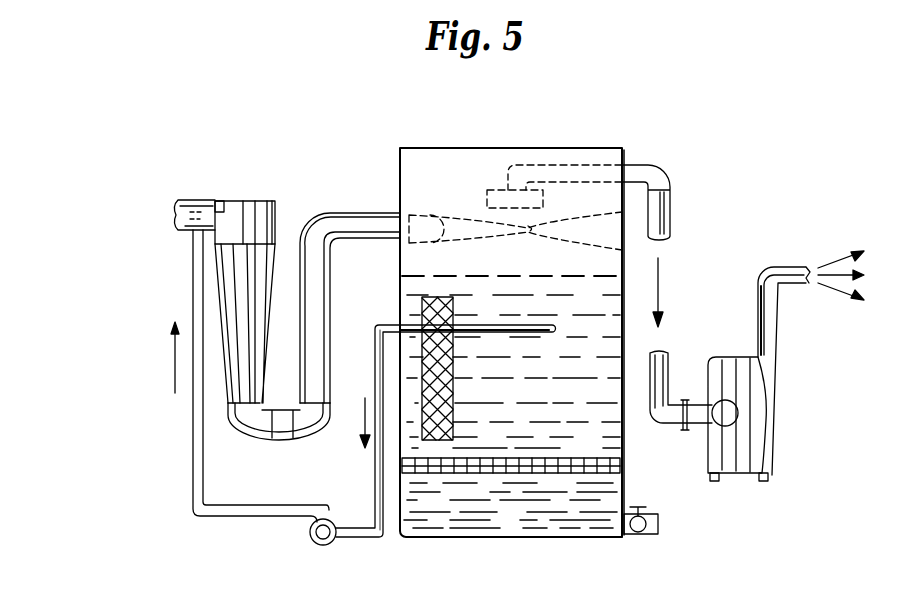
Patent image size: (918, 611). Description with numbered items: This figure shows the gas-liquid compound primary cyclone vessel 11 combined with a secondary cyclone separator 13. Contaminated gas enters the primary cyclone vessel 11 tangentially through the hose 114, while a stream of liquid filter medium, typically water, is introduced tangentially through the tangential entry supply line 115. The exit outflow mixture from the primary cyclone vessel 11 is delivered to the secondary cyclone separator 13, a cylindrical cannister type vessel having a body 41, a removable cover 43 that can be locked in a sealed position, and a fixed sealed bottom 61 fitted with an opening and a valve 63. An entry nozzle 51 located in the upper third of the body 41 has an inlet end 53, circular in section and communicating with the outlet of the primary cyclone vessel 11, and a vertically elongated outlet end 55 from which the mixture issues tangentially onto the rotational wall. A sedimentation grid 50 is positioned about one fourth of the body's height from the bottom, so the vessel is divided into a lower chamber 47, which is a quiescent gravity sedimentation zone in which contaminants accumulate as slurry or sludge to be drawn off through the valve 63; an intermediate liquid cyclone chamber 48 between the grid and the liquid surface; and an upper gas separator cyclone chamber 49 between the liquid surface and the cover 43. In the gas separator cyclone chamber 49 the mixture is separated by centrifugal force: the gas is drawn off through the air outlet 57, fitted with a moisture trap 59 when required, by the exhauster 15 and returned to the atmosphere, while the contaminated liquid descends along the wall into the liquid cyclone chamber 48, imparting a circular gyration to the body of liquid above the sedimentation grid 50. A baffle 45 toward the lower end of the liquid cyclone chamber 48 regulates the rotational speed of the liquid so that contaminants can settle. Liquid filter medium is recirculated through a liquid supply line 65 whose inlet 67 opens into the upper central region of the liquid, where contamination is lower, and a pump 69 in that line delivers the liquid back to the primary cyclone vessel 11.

The gas-liquid compound primary cyclone vessel 11 is at (247, 183).
The secondary cyclone separator 13 is at (476, 138).
The exhauster 15 is at (730, 338).
The body 41 is at (400, 168).
The removable cover 43 is at (405, 147).
The baffle 45 is at (435, 440).
The lower chamber 47 is at (573, 518).
The liquid cyclone chamber 48 is at (538, 433).
The gas separator cyclone chamber 49 is at (562, 190).
The sedimentation grid 50 is at (622, 462).
The entry nozzle 51 is at (622, 250).
The inlet end 53 is at (370, 212).
The outlet end 55 is at (672, 203).
The air outlet 57 is at (514, 170).
The moisture trap 59 is at (487, 195).
The bottom 61 is at (623, 540).
The valve 63 is at (384, 322).
The liquid supply line 65 is at (238, 517).
The inlet 67 is at (548, 334).
The pump 69 is at (325, 543).
The hose 114 is at (172, 199).
The tangential entry supply line 115 is at (228, 197).